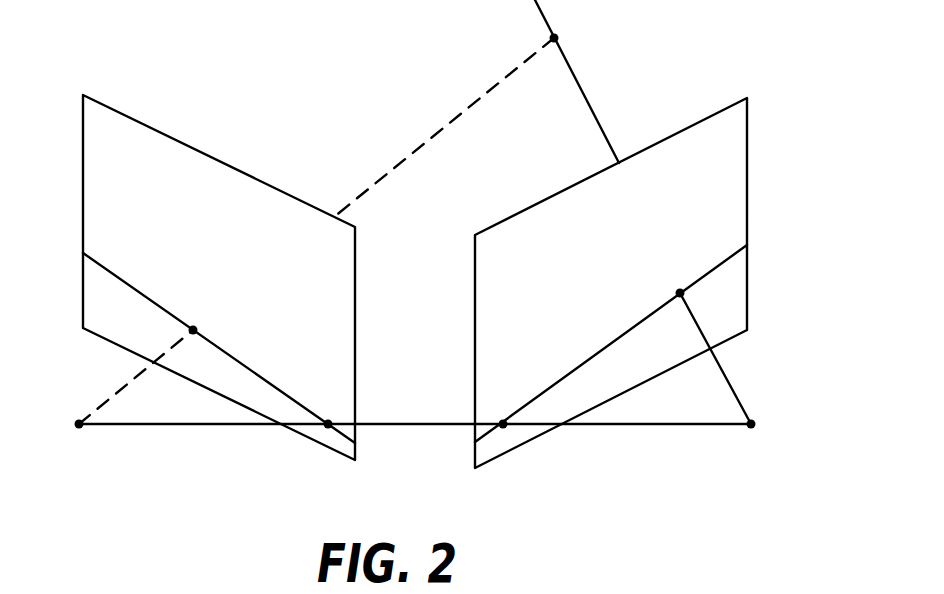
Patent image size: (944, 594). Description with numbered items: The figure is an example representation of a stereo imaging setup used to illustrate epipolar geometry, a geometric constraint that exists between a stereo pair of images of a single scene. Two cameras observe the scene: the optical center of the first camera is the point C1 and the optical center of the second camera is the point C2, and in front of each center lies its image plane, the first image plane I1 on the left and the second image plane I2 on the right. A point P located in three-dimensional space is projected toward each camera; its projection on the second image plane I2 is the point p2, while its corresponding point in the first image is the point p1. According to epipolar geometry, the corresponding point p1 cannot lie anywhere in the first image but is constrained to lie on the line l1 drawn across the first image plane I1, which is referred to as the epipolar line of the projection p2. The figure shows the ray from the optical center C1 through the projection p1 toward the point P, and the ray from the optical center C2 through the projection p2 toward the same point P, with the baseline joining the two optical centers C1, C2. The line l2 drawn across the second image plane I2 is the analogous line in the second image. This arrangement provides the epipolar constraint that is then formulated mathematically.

The point in three-dimensional space P is at (476, 108).
The corresponding point in the first image p1 is at (191, 301).
The projection of the point on the second image plane p2 is at (693, 266).
The optical center of the first camera C1 is at (118, 398).
The optical center of the second camera C2 is at (746, 380).
The first image plane I1 is at (219, 277).
The second image plane I2 is at (611, 283).
The epipolar line of p2 l1 is at (219, 339).
The epipolar line in second image l2 is at (611, 343).